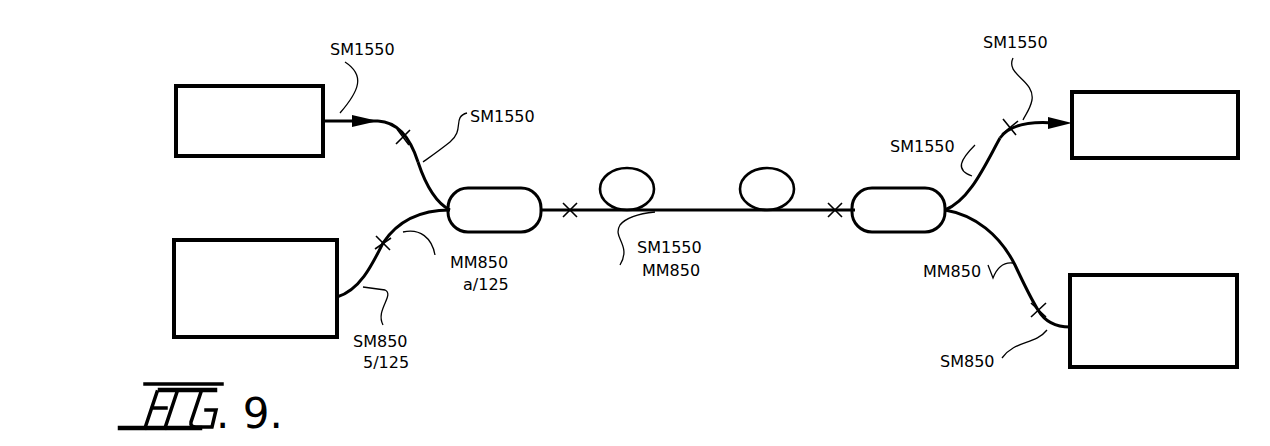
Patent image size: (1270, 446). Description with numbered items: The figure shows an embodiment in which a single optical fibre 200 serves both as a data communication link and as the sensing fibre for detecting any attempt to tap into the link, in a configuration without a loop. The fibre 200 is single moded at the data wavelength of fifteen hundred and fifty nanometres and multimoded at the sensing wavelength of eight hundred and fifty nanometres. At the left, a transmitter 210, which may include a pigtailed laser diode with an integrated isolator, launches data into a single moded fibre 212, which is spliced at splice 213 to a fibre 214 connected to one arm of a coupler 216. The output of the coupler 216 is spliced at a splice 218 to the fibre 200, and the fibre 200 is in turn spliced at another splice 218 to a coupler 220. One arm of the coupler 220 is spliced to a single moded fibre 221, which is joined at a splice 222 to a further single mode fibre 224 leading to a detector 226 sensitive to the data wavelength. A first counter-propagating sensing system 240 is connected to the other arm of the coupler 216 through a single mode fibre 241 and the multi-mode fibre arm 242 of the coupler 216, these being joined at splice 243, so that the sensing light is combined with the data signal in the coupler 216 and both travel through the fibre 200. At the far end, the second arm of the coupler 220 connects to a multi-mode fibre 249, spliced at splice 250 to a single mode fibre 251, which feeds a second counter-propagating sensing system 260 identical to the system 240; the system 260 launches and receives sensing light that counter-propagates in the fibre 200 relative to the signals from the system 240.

The optical fibre 200 is at (744, 213).
The transmitter 210 is at (248, 134).
The single moded fibre 212 is at (403, 133).
The splice 213 is at (412, 137).
The fibre 214 is at (432, 193).
The coupler 216 is at (510, 224).
The splice 218 is at (572, 215).
The coupler 220 is at (912, 225).
The single moded fibre 221 is at (990, 155).
The splice 222 is at (1007, 122).
The single mode fibre 224 is at (1047, 118).
The detector 226 is at (1162, 141).
The counter-propagating sensing system 240 is at (266, 306).
The single mode fibre 241 is at (370, 268).
The multi-mode fibre arm 242 is at (400, 225).
The splice 243 is at (392, 247).
The multi-mode fibre 249 is at (1005, 245).
The splice 250 is at (1035, 310).
The single mode fibre 251 is at (1060, 328).
The counter-propagating sensing system 260 is at (1161, 336).